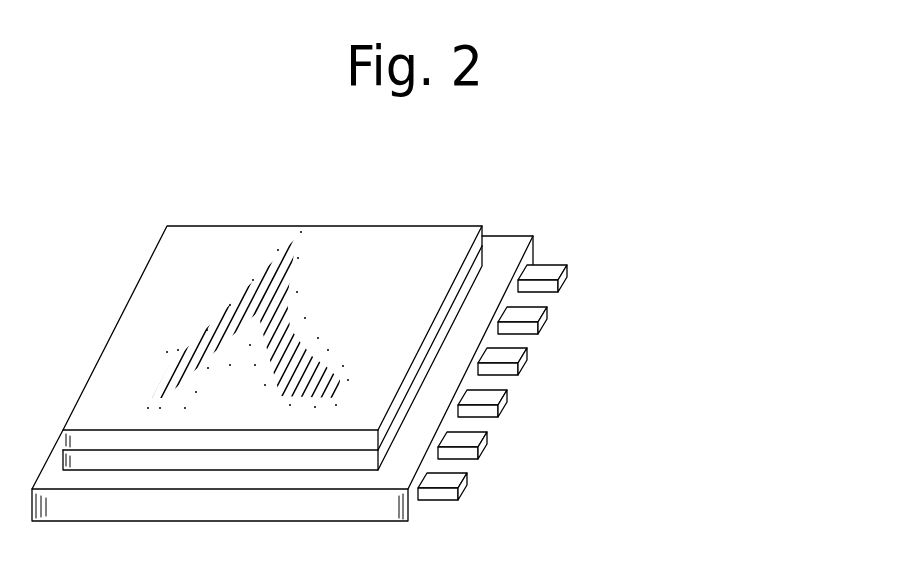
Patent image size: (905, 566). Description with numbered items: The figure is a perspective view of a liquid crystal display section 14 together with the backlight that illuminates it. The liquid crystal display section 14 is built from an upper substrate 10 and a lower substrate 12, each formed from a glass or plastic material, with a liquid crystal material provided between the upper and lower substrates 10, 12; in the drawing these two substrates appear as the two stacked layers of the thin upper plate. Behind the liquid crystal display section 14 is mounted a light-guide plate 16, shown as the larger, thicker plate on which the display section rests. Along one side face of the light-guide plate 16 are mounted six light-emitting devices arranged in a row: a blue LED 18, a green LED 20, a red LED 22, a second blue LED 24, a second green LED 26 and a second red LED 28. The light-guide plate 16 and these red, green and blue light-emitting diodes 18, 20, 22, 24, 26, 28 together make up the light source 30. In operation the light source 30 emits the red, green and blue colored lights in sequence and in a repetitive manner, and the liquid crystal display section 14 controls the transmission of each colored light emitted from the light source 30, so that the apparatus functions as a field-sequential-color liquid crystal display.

The upper substrate 10 is at (483, 230).
The lower substrate 12 is at (483, 259).
The liquid crystal display section 14 is at (384, 297).
The light-guide plate 16 is at (533, 236).
The blue light-emitting diode 18 is at (562, 276).
The green light-emitting diode 20 is at (544, 318).
The red light-emitting diode 22 is at (524, 360).
The blue light-emitting diode 24 is at (504, 402).
The green light-emitting diode 26 is at (484, 444).
The red light-emitting diode 28 is at (464, 486).
The light source 30 is at (620, 355).